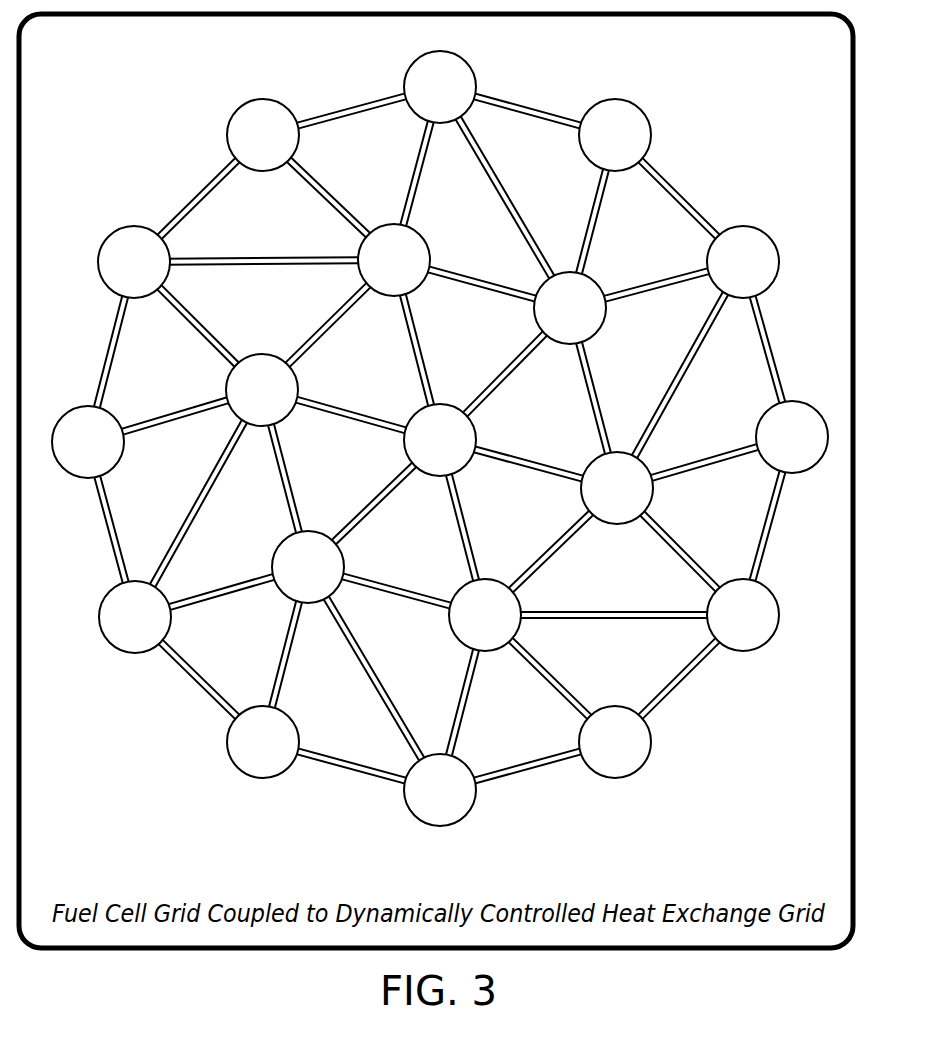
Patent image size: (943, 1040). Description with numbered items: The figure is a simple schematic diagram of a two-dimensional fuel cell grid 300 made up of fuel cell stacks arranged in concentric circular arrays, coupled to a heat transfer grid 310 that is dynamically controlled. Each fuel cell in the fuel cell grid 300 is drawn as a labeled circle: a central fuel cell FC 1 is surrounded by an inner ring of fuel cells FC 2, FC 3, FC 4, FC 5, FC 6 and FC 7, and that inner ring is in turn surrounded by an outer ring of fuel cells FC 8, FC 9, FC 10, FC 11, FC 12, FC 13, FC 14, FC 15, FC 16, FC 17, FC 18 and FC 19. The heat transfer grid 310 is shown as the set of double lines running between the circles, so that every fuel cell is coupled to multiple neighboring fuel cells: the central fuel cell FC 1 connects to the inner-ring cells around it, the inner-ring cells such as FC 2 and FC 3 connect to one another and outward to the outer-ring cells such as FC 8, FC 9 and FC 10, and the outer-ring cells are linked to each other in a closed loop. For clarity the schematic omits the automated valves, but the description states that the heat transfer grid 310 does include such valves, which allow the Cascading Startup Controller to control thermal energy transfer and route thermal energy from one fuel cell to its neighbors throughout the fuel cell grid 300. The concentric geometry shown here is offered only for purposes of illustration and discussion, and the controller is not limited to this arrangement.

The fuel cell grid 300 is at (440, 438).
The heat transfer grid 310 is at (199, 690).
The fuel cell FC1 1 is at (440, 440).
The fuel cell FC2 2 is at (394, 260).
The fuel cell FC3 3 is at (570, 308).
The fuel cell FC4 4 is at (617, 488).
The fuel cell FC5 5 is at (485, 615).
The fuel cell FC6 6 is at (308, 567).
The fuel cell FC7 7 is at (262, 390).
The fuel cell FC8 8 is at (263, 135).
The fuel cell FC9 9 is at (440, 87).
The fuel cell FC10 10 is at (615, 135).
The fuel cell FC11 11 is at (743, 262).
The fuel cell FC12 12 is at (792, 437).
The fuel cell FC13 13 is at (743, 615).
The fuel cell FC14 14 is at (615, 742).
The fuel cell FC15 15 is at (440, 790).
The fuel cell FC16 16 is at (263, 742).
The fuel cell FC17 17 is at (135, 617).
The fuel cell FC18 18 is at (88, 442).
The fuel cell FC19 19 is at (134, 262).